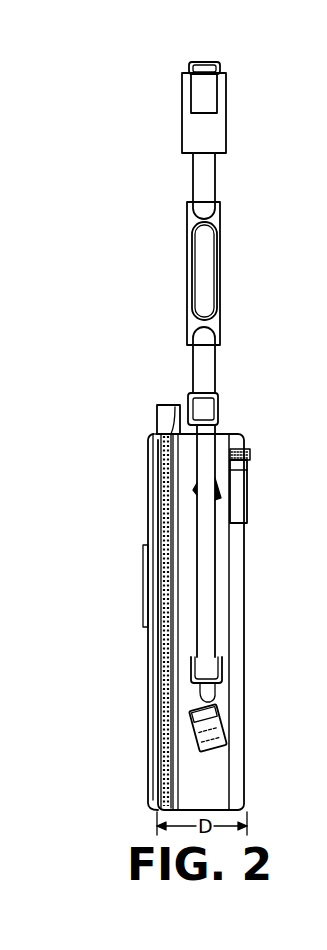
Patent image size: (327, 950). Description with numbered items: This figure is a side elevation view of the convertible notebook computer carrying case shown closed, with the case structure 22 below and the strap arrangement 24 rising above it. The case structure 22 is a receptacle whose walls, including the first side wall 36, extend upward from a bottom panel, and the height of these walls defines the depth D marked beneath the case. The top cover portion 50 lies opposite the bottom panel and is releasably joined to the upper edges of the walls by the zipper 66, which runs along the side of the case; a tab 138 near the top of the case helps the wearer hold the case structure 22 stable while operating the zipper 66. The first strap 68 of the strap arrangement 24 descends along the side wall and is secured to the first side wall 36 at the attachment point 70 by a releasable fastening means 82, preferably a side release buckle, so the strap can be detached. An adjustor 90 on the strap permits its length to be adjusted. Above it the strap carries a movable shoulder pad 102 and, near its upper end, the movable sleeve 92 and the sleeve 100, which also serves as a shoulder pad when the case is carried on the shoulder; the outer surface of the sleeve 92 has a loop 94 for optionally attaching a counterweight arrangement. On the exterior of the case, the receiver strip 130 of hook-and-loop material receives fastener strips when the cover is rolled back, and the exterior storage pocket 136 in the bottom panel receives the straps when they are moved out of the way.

The case structure 22 is at (148, 648).
The strap arrangement 24 is at (226, 245).
The first side wall 36 is at (222, 795).
The top cover portion 50 is at (150, 682).
The zipper 66 is at (163, 495).
The first strap 68 is at (205, 569).
The attachment point 70 is at (224, 735).
The releasable fastening means 82 is at (208, 694).
The adjustor 90 is at (218, 400).
The sleeve 92 is at (206, 100).
The loop 94 is at (201, 64).
The sleeve 100 is at (220, 133).
The shoulder pad 102 is at (212, 323).
The receiver strip 130 is at (241, 499).
The exterior storage pocket 136 is at (249, 452).
The tab 138 is at (158, 408).